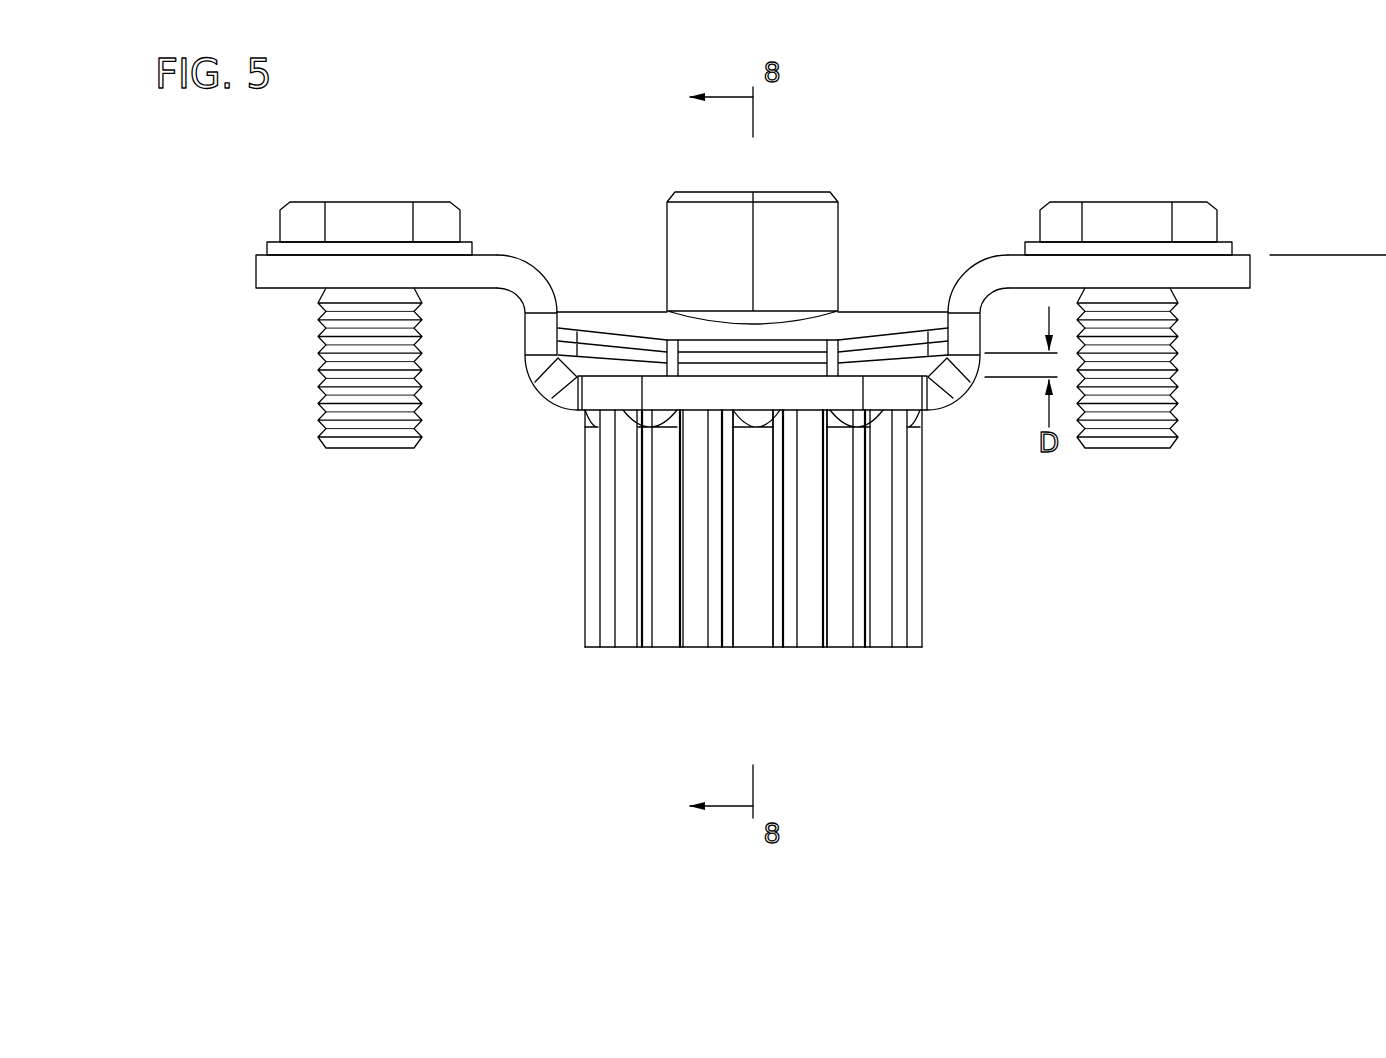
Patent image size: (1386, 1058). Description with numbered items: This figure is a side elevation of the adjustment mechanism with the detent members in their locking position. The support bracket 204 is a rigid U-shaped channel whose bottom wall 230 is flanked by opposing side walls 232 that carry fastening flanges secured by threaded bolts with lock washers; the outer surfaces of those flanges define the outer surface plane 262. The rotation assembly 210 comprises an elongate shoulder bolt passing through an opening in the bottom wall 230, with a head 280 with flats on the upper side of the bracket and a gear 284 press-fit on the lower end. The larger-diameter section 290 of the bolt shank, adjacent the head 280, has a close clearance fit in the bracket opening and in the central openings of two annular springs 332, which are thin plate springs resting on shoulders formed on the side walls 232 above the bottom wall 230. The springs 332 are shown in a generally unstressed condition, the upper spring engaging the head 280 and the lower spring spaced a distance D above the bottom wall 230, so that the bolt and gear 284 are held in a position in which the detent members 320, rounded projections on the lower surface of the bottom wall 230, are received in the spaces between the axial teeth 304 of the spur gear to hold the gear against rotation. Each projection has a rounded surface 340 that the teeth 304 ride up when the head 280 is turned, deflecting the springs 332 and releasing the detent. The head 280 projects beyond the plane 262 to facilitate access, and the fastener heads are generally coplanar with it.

The support bracket 204 is at (247, 283).
The rotation assembly 210 is at (870, 205).
The bottom wall 230 is at (607, 390).
The side walls 232 is at (590, 317).
The outer surface plane 262 is at (1327, 255).
The head 280 is at (792, 247).
The gear 284 is at (588, 648).
The larger-diameter section 290 is at (653, 372).
The teeth 304 is at (922, 620).
The detent members 320 is at (863, 425).
The annular springs 332 is at (862, 325).
The rounded surface 340 is at (645, 428).